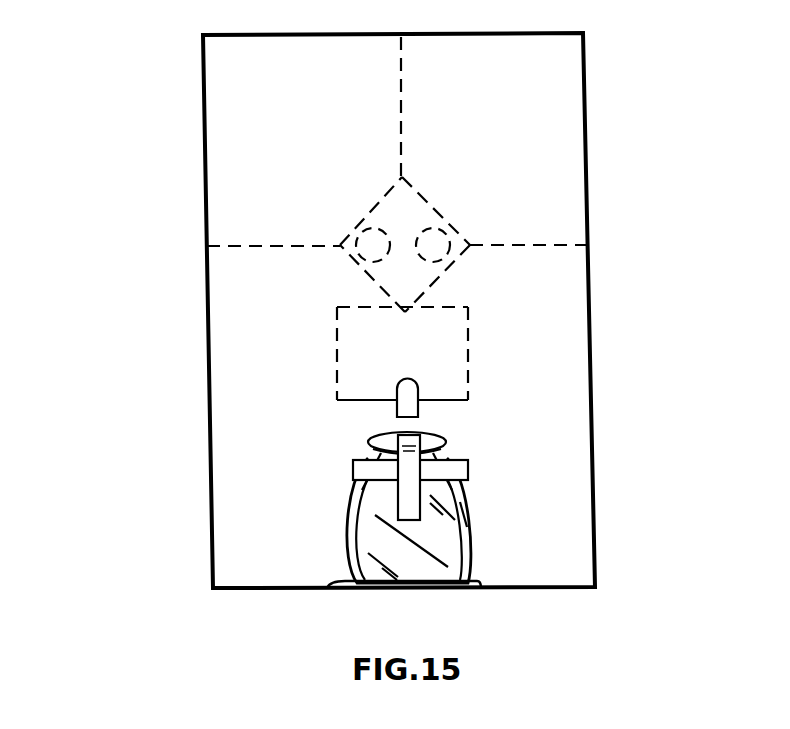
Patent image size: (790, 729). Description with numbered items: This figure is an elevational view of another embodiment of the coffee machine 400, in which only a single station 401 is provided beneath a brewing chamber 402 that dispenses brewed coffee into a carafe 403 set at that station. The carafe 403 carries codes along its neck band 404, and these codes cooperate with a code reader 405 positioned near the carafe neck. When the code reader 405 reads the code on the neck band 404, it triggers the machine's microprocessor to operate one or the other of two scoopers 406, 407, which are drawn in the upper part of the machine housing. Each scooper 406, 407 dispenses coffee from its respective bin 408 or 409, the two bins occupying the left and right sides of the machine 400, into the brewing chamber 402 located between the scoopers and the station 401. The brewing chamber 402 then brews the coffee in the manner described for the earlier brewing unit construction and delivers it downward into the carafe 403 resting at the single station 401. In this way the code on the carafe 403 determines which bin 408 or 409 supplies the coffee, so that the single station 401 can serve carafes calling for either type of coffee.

The machine 400 is at (596, 44).
The single station 401 is at (330, 588).
The brewing chamber 402 is at (458, 347).
The carafe 403 is at (457, 545).
The neck band 404 is at (468, 468).
The code reader 405 is at (353, 469).
The scooper 406 is at (377, 246).
The scooper 407 is at (440, 247).
The bin 408 is at (226, 207).
The bin 409 is at (555, 192).